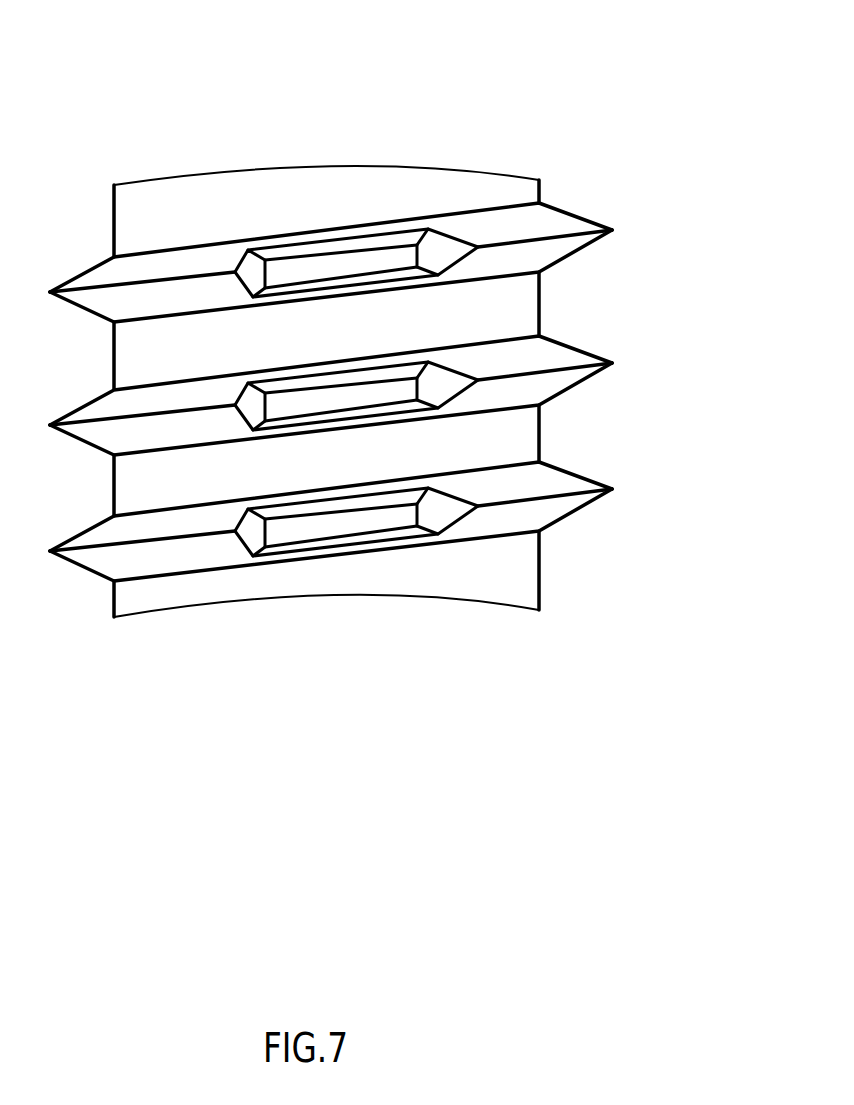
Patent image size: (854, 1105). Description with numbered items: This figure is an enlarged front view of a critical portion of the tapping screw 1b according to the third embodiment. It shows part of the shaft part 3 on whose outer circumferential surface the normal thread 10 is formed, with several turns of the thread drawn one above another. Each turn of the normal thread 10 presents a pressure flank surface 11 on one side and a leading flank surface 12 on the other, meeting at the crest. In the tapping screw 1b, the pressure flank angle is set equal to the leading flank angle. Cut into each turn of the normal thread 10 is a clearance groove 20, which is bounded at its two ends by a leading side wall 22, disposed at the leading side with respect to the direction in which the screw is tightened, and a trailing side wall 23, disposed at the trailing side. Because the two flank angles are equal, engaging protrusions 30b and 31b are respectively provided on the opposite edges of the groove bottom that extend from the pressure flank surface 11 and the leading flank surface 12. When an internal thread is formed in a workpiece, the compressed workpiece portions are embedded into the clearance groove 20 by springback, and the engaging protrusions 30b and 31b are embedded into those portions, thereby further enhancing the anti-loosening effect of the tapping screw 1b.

The tapping screw 1b is at (566, 82).
The shaft part 3 is at (135, 210).
The normal thread 10 is at (612, 230).
The pressure flank surface 11 is at (555, 216).
The leading flank surface 12 is at (548, 258).
The clearance groove 20 is at (297, 270).
The leading side wall 22 is at (250, 273).
The trailing side wall 23 is at (435, 255).
The engaging protrusion 30b is at (350, 240).
The engaging protrusion 31b is at (387, 280).